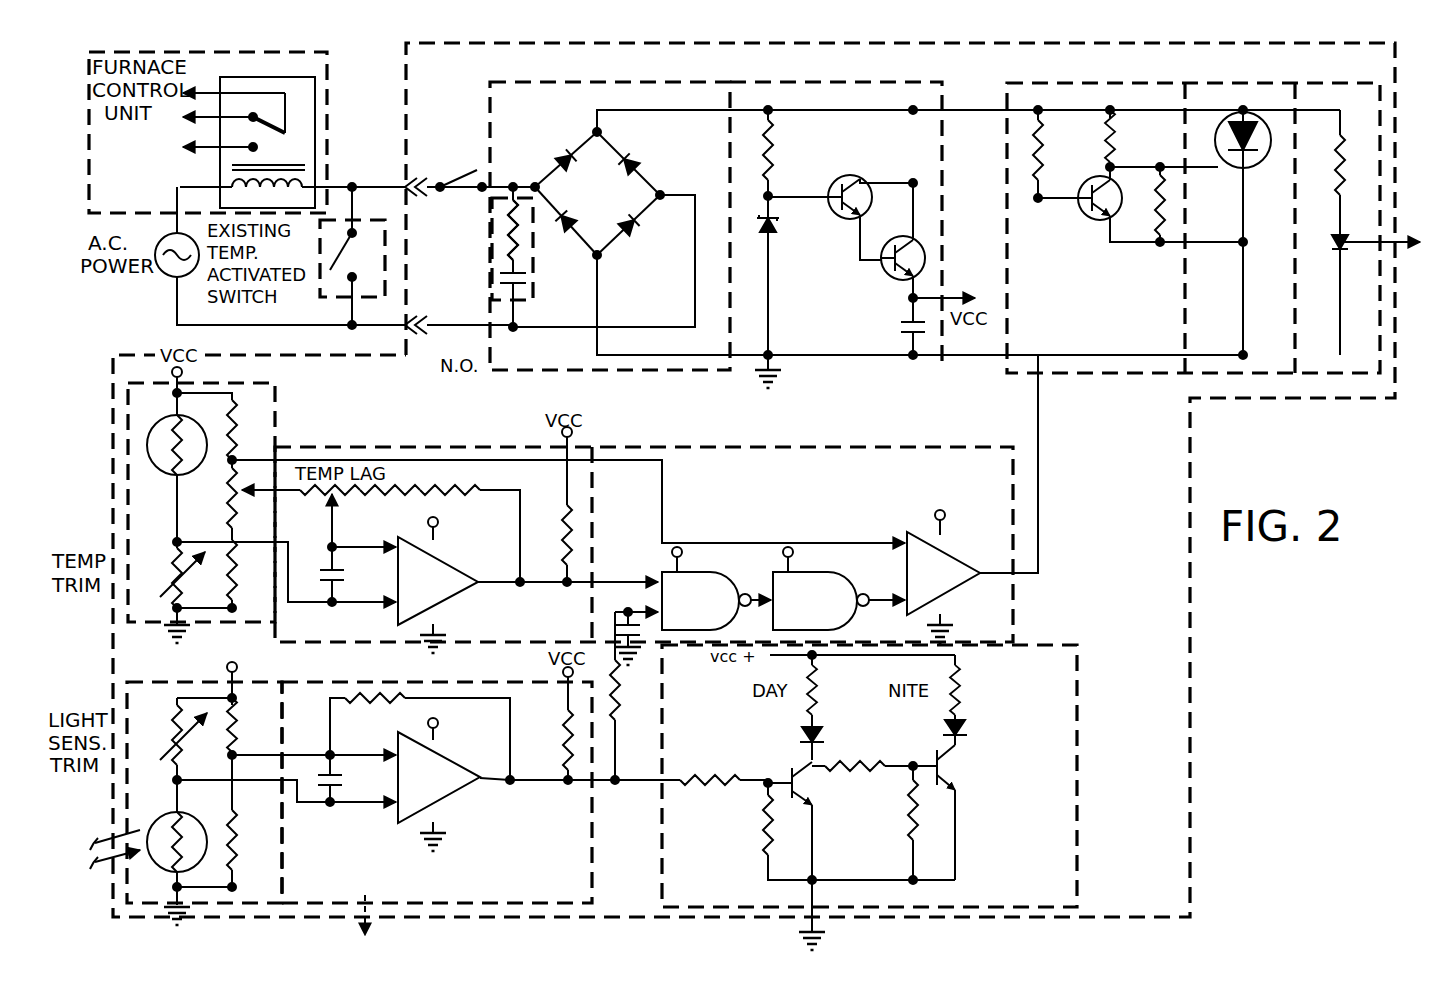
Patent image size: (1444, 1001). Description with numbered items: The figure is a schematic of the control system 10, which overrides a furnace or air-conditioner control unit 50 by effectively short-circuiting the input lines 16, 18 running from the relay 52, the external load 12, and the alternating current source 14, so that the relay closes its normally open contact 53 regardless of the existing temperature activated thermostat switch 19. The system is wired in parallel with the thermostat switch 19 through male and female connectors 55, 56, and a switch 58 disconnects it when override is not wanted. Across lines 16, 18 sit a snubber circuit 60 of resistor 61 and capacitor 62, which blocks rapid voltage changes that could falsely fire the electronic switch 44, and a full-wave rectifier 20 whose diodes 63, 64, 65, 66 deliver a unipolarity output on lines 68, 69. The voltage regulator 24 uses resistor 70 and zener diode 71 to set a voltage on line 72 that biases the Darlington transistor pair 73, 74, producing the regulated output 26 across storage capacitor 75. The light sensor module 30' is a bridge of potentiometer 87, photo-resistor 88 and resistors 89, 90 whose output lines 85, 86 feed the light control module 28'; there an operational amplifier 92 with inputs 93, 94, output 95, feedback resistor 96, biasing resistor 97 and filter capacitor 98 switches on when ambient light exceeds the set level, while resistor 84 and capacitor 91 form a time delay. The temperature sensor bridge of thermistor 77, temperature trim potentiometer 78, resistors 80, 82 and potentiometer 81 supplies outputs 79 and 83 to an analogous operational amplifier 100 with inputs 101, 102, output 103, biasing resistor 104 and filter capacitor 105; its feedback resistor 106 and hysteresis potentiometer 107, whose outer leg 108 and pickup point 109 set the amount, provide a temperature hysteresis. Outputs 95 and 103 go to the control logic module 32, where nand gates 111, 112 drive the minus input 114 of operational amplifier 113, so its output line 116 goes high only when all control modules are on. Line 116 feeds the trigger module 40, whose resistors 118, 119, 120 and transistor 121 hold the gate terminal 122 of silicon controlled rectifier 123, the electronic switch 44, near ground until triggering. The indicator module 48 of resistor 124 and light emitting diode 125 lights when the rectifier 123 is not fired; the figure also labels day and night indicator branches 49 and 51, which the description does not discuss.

The control system 10 is at (1197, 597).
The external load 12 is at (228, 80).
The external source of electricity 14 is at (166, 270).
The input line 16 is at (498, 186).
The input line 18 is at (440, 328).
The temperature activated thermostat switch 19 is at (385, 266).
The full-wave rectifier 20 is at (608, 82).
The direct current voltage regulator 24 is at (812, 82).
The regulated direct current voltage output 26 is at (940, 290).
The light control module 28' is at (419, 668).
The light sensor module 30' is at (198, 675).
The control logic module 32 is at (845, 447).
The trigger module 40 is at (1104, 83).
The electronic switch 44 is at (1218, 83).
The indicator module 48 is at (1325, 83).
The day indicator circuit 49 is at (826, 742).
The temperature control unit 50 is at (327, 78).
The night indicator circuit 51 is at (960, 730).
The relay 52 is at (228, 185).
The normally open contact 53 is at (252, 144).
The male connector 55 is at (410, 372).
The female connector 56 is at (400, 182).
The switch 58 is at (466, 168).
The snubber circuit 60 is at (498, 292).
The resistor 61 is at (498, 222).
The capacitor 62 is at (498, 268).
The diode 63 is at (556, 150).
The diode 64 is at (640, 162).
The diode 65 is at (636, 235).
The diode 66 is at (568, 232).
The output line 68 is at (680, 112).
The output line 69 is at (642, 357).
The resistor 70 is at (776, 160).
The zener diode 71 is at (780, 228).
The line 72 is at (816, 194).
The Darlington transistor 73 is at (856, 176).
The Darlington transistor 74 is at (892, 276).
The capacitor 75 is at (900, 324).
The thermistor 77 is at (162, 422).
The potentiometer 78 is at (170, 556).
The output 79 is at (218, 542).
The resistor 80 is at (238, 428).
The potentiometer 81 is at (228, 490).
The resistor 82 is at (226, 584).
The output line 83 is at (246, 500).
The resistor 84 is at (622, 716).
The output line 85 is at (186, 784).
The output line 86 is at (240, 750).
The potentiometer 87 is at (168, 712).
The photo-resistor 88 is at (162, 812).
The resistor 89 is at (242, 720).
The resistor 90 is at (240, 830).
The capacitor 91 is at (616, 616).
The operational amplifier 92 is at (452, 794).
The input 93 is at (364, 754).
The input 94 is at (344, 806).
The output 95 is at (542, 784).
The feedback resistor 96 is at (378, 706).
The biasing resistor 97 is at (560, 740).
The capacitor 98 is at (342, 778).
The operational amplifier 100 is at (460, 590).
The input line 101 is at (370, 552).
The input line 102 is at (350, 606).
The output line 103 is at (544, 586).
The biasing resistor 104 is at (562, 526).
The filter capacitor 105 is at (344, 574).
The resistor 106 is at (448, 484).
The potentiometer 107 is at (358, 496).
The outer leg 108 is at (314, 494).
The potentiometer pickup point 109 is at (326, 548).
The nand gate 111 is at (722, 568).
The nand gate 112 is at (834, 568).
The operational amplifier 113 is at (952, 556).
The minus input 114 is at (886, 606).
The output line 116 is at (1026, 578).
The resistor 118 is at (1042, 148).
The resistor 119 is at (1116, 152).
The resistor 120 is at (1170, 226).
The transistor 121 is at (1092, 216).
The gate terminal 122 is at (1196, 170).
The silicon controlled rectifier 123 is at (1252, 168).
The resistor 124 is at (1336, 204).
The light emitting diode 125 is at (1334, 250).